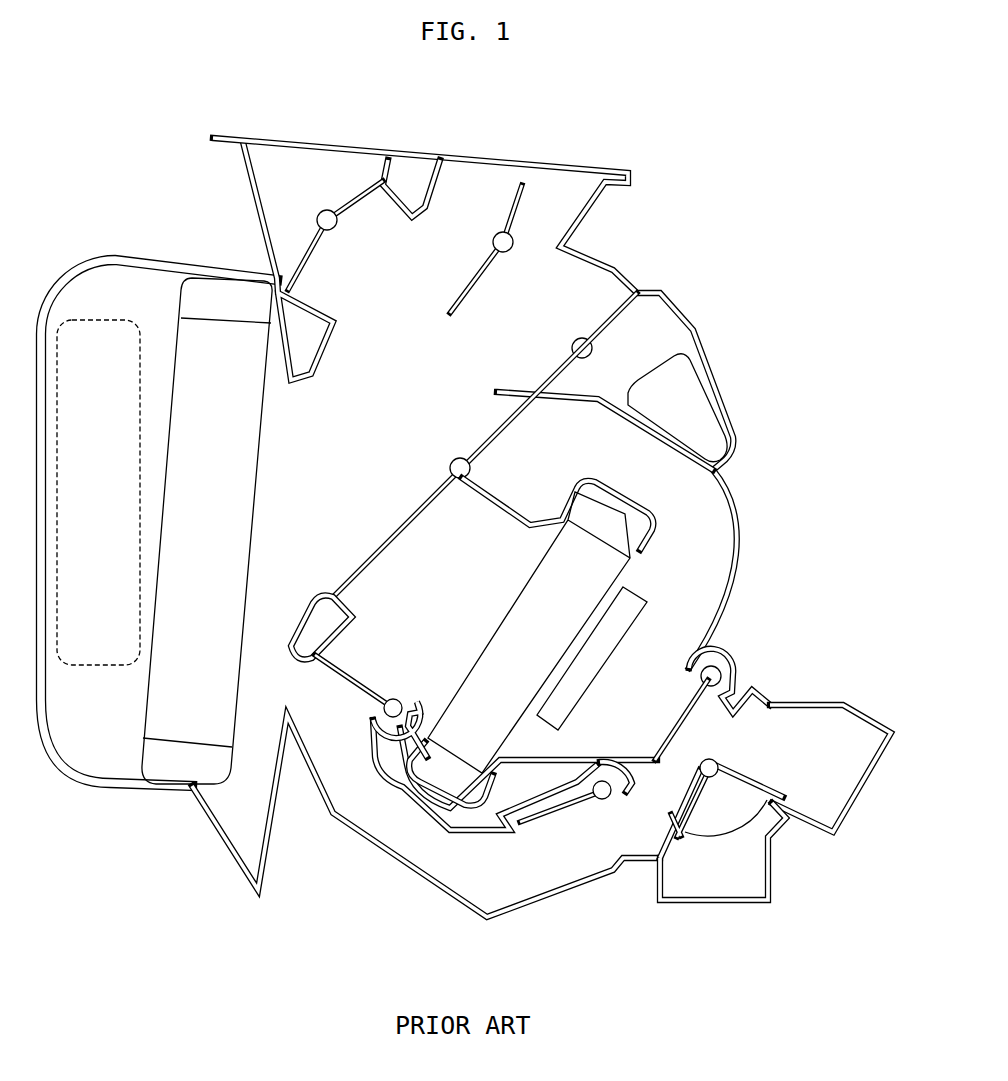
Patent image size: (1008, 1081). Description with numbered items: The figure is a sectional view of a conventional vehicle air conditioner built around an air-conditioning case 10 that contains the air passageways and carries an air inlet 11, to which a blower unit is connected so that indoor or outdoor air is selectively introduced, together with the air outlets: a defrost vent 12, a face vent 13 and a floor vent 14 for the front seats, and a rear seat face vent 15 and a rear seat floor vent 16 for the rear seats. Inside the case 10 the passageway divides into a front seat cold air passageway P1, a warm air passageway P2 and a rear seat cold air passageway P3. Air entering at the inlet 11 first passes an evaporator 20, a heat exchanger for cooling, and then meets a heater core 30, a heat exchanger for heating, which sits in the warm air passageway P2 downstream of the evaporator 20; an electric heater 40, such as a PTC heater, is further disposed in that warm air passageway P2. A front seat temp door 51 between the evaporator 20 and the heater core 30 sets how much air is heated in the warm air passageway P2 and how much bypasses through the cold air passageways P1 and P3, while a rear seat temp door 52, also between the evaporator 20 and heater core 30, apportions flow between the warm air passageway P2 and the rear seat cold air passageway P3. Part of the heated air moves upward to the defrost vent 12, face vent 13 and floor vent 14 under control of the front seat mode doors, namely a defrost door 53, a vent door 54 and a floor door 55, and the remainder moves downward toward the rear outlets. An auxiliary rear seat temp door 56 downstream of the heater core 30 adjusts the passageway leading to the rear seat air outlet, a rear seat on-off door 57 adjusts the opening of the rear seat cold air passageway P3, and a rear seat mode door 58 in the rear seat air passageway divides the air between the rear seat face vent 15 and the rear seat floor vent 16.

The air-conditioning case 10 is at (200, 262).
The air inlet 11 is at (97, 660).
The defrost vent 12 is at (286, 168).
The face vent 13 is at (551, 180).
The floor vent 14 is at (695, 422).
The rear seat face vent 15 is at (847, 780).
The rear seat floor vent 16 is at (752, 887).
The evaporator 20 is at (170, 765).
The heater core 30 is at (460, 737).
The electric heater 40 is at (628, 668).
The front seat temp door 51 is at (395, 545).
The rear seat temp door 52 is at (350, 688).
The defrost door 53 is at (347, 195).
The vent door 54 is at (487, 273).
The floor door 55 is at (615, 330).
The auxiliary rear seat temp door 56 is at (683, 722).
The rear seat on-off door 57 is at (553, 813).
The rear seat mode door 58 is at (697, 807).
The front seat cold air passageway P1 is at (332, 424).
The warm air passageway P2 is at (702, 544).
The rear seat cold air passageway P3 is at (523, 868).